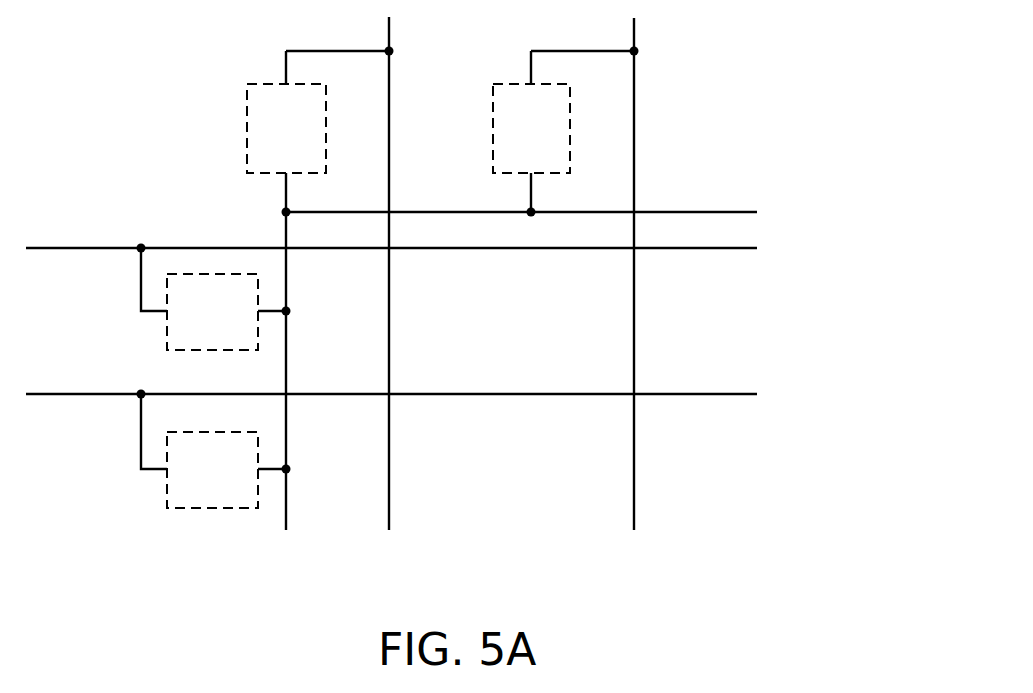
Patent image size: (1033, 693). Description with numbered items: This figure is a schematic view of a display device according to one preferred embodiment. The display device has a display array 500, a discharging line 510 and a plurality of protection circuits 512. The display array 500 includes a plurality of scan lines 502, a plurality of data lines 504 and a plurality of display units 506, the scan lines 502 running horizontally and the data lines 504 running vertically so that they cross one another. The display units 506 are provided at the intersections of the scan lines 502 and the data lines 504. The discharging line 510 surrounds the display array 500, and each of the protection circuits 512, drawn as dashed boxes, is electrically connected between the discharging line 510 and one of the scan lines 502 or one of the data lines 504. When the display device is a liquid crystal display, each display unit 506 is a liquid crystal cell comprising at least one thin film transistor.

The display array 500 is at (426, 299).
The scan lines 502 is at (87, 248).
The data lines 504 is at (389, 30).
The display units 506 is at (510, 399).
The discharging line 510 is at (665, 212).
The protection circuits 512 is at (180, 333).